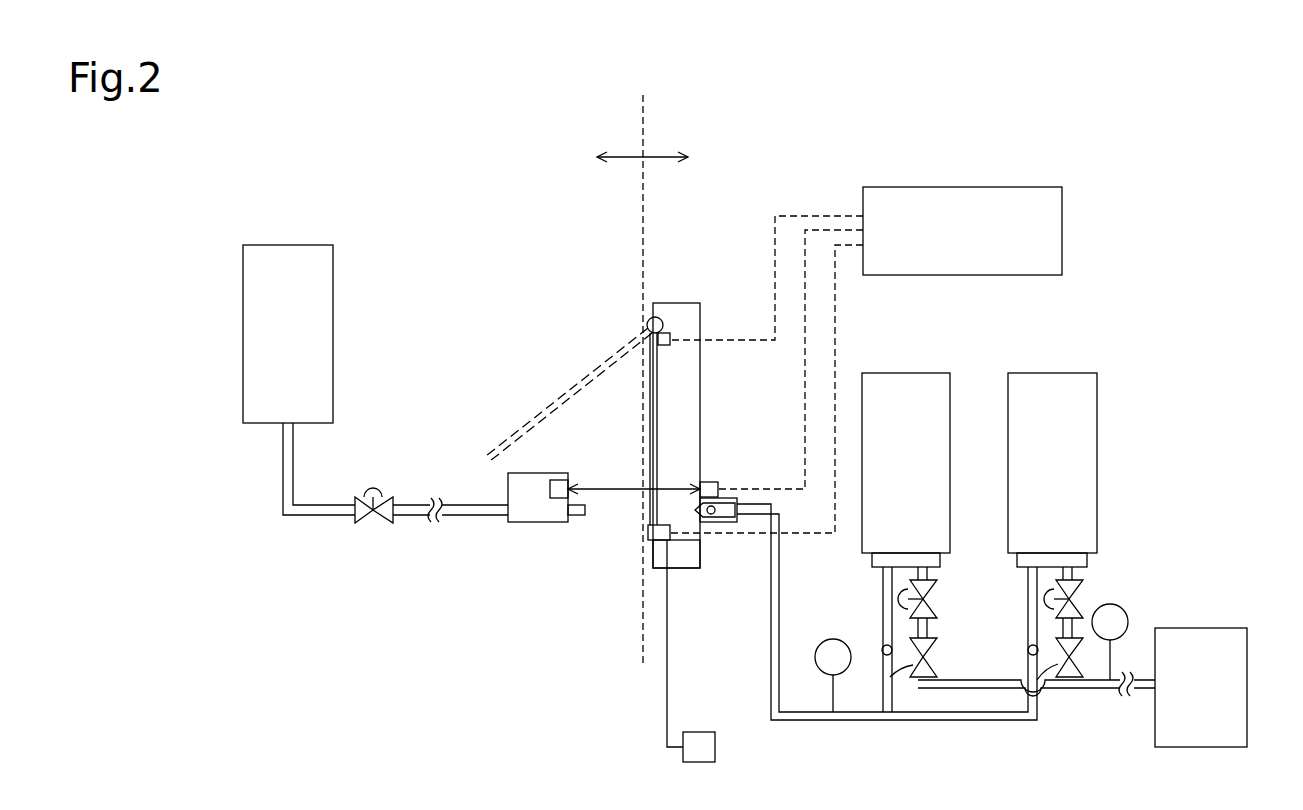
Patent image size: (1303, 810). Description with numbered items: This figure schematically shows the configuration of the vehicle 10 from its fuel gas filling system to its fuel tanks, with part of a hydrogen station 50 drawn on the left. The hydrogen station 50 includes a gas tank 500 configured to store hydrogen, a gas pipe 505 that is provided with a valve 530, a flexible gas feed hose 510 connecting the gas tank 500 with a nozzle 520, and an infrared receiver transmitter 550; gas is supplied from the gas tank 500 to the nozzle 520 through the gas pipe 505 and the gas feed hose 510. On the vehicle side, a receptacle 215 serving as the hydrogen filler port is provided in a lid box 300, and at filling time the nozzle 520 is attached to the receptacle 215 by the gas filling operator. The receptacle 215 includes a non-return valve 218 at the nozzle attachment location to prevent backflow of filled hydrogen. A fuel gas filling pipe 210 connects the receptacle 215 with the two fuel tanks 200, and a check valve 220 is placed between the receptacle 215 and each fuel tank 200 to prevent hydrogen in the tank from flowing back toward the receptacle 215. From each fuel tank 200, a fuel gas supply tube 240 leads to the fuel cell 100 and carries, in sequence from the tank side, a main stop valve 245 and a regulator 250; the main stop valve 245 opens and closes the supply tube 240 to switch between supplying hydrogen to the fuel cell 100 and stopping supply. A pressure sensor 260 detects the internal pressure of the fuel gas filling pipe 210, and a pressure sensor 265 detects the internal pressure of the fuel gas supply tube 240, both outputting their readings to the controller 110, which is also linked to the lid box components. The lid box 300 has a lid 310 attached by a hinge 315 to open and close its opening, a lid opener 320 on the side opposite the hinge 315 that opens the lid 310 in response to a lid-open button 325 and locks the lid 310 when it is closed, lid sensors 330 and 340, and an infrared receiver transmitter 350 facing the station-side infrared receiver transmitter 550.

The vehicle 10 is at (710, 159).
The hydrogen station 50 is at (624, 159).
The fuel cell 100 is at (1235, 628).
The controller 110 is at (993, 187).
The fuel tank 200 is at (932, 373).
The fuel gas filling pipe 210 is at (780, 597).
The receptacle 215 is at (717, 523).
The non-return valve 218 is at (700, 502).
The check valve 220 is at (882, 648).
The fuel gas supply tube 240 is at (948, 678).
The main stop valve 245 is at (932, 588).
The regulator 250 is at (880, 723).
The pressure sensor 260 is at (815, 660).
The pressure sensor 265 is at (1127, 612).
The lid box 300 is at (695, 303).
The lid 310 is at (657, 395).
The hinge 315 is at (657, 318).
The lid opener 320 is at (660, 550).
The lid-open button 325 is at (705, 732).
The lid sensor 330 is at (672, 533).
The lid sensor 340 is at (668, 332).
The infrared receiver transmitter 350 is at (710, 481).
The gas tank 500 is at (315, 243).
The gas pipe 505 is at (310, 520).
The gas feed hose 510 is at (483, 515).
The nozzle 520 is at (577, 522).
The valve 530 is at (386, 500).
The infrared receiver transmitter 550 is at (556, 473).